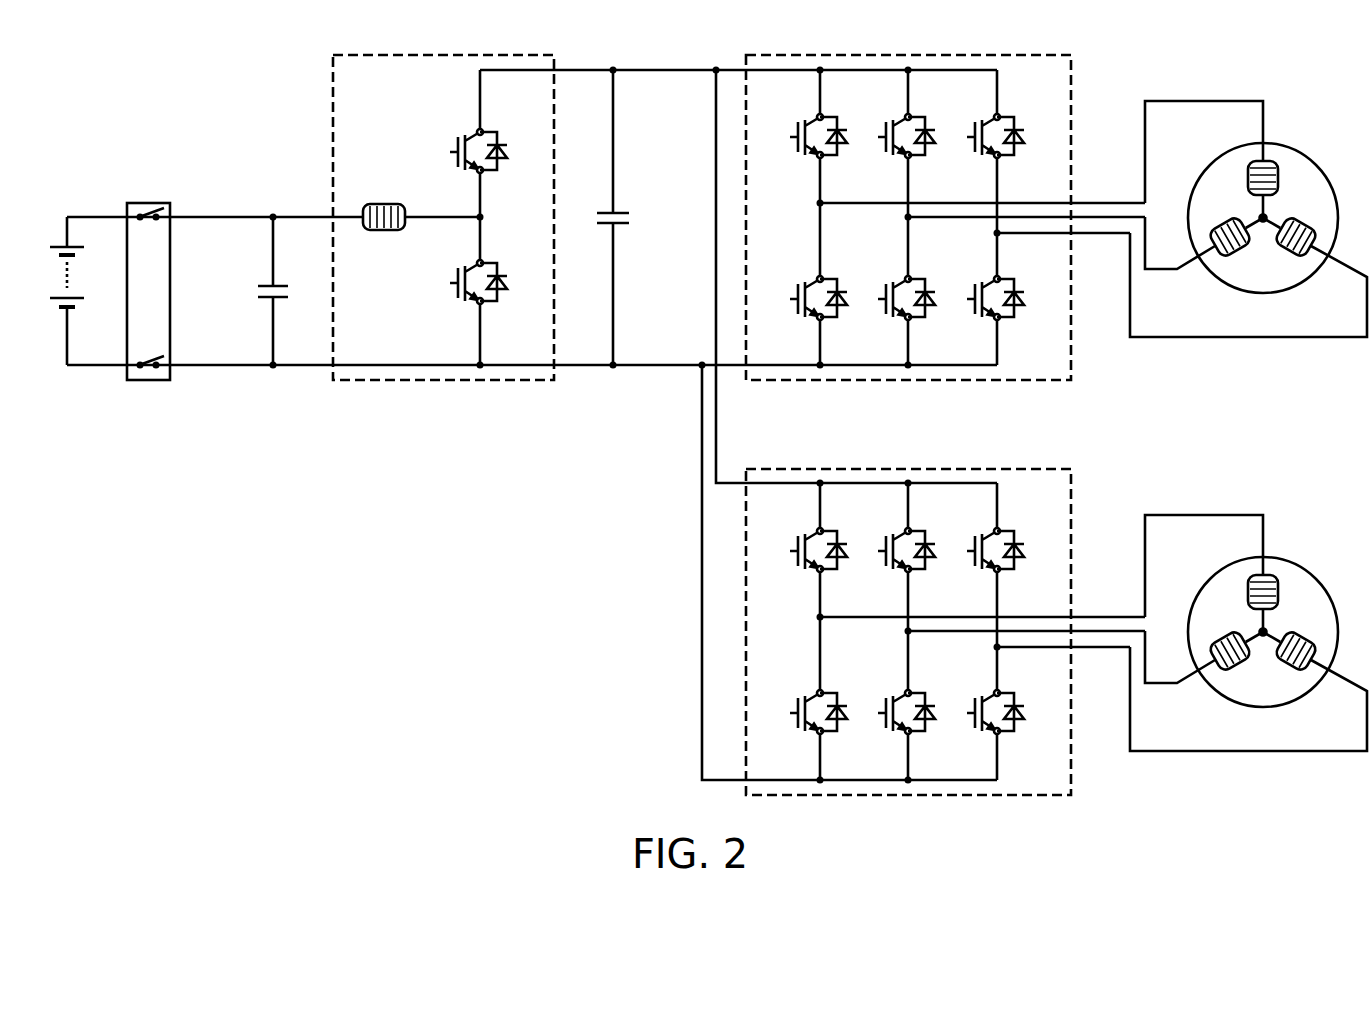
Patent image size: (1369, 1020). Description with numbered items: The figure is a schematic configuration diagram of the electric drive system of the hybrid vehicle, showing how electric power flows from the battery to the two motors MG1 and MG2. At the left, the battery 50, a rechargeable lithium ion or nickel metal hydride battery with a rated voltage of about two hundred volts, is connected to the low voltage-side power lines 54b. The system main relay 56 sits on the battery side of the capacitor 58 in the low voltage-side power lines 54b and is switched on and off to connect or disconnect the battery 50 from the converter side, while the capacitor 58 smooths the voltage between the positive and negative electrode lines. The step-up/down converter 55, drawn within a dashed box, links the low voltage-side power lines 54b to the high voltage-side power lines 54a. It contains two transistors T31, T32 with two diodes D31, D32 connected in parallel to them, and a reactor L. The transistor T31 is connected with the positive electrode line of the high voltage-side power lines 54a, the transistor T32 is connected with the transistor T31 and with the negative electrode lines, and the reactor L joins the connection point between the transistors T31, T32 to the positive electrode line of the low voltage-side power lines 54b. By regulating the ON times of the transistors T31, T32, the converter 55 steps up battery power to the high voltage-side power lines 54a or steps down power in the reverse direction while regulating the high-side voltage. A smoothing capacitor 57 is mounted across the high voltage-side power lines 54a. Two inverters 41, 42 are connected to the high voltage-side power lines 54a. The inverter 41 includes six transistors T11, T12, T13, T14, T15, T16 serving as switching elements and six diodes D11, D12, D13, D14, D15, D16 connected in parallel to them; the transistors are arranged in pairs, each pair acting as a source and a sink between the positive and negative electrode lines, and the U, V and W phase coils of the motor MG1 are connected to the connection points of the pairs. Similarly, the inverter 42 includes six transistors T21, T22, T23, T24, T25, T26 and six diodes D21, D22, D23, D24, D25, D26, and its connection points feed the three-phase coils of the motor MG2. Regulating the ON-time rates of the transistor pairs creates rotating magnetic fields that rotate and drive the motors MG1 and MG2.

The battery 50 is at (57, 245).
The system main relay 56 is at (150, 202).
The capacitor 58 is at (281, 282).
The low voltage-side power lines 54b is at (230, 217).
The step-up/down converter 55 is at (436, 55).
The reactor L is at (383, 204).
The transistor T31 is at (453, 148).
The diode D31 is at (504, 160).
The transistor T32 is at (453, 279).
The diode D32 is at (504, 291).
The capacitor 57 is at (619, 208).
The high voltage-side power lines 54a is at (687, 70).
The inverter 41 is at (907, 55).
The transistor T11 is at (793, 133).
The transistor T12 is at (881, 133).
The transistor T13 is at (970, 133).
The transistor T14 is at (793, 295).
The transistor T15 is at (881, 295).
The transistor T16 is at (970, 295).
The diode D11 is at (844, 145).
The diode D12 is at (932, 145).
The diode D13 is at (1021, 145).
The diode D14 is at (844, 307).
The diode D15 is at (932, 307).
The diode D16 is at (1021, 307).
The inverter 42 is at (907, 469).
The transistor T21 is at (793, 547).
The transistor T22 is at (881, 547).
The transistor T23 is at (970, 547).
The transistor T24 is at (793, 709).
The transistor T25 is at (881, 709).
The transistor T26 is at (970, 709).
The diode D21 is at (844, 559).
The diode D22 is at (932, 559).
The diode D23 is at (1021, 559).
The diode D24 is at (844, 721).
The diode D25 is at (932, 721).
The diode D26 is at (1021, 721).
The motor MG1 is at (1298, 148).
The motor MG2 is at (1298, 562).